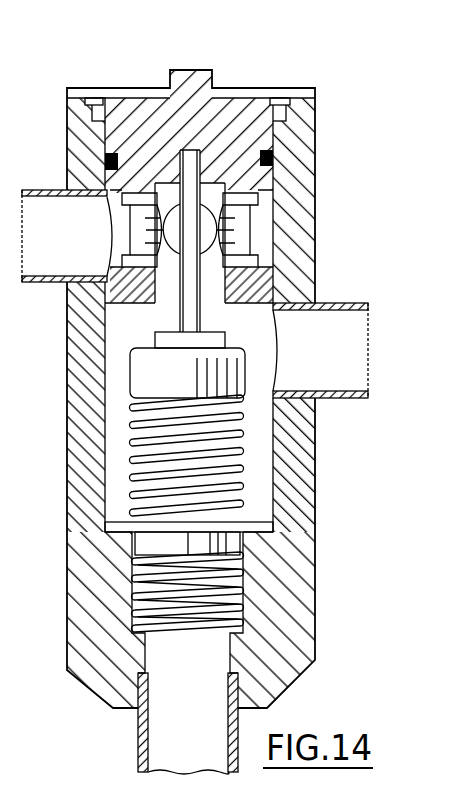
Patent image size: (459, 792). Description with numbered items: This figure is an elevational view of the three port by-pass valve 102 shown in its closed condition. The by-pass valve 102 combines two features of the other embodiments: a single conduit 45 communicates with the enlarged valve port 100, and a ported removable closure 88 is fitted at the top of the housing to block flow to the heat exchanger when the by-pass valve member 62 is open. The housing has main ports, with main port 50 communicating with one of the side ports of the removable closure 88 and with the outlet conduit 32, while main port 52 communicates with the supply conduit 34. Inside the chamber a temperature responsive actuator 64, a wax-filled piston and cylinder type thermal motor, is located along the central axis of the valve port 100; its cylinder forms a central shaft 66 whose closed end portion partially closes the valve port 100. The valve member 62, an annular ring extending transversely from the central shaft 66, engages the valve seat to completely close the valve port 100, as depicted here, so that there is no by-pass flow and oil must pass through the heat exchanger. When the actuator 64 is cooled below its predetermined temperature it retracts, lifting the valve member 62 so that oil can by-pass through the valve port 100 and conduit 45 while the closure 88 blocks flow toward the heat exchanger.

The three port by-pass valve 102 is at (252, 64).
The removable closure 88 is at (240, 137).
The outlet conduit 32 is at (58, 235).
The main port 50 is at (88, 232).
The supply conduit 34 is at (320, 339).
The main port 52 is at (297, 352).
The temperature responsive actuator 64 is at (145, 378).
The valve member 62 is at (105, 524).
The central shaft 66 is at (170, 547).
The valve port 100 is at (235, 542).
The conduit 45 is at (138, 735).